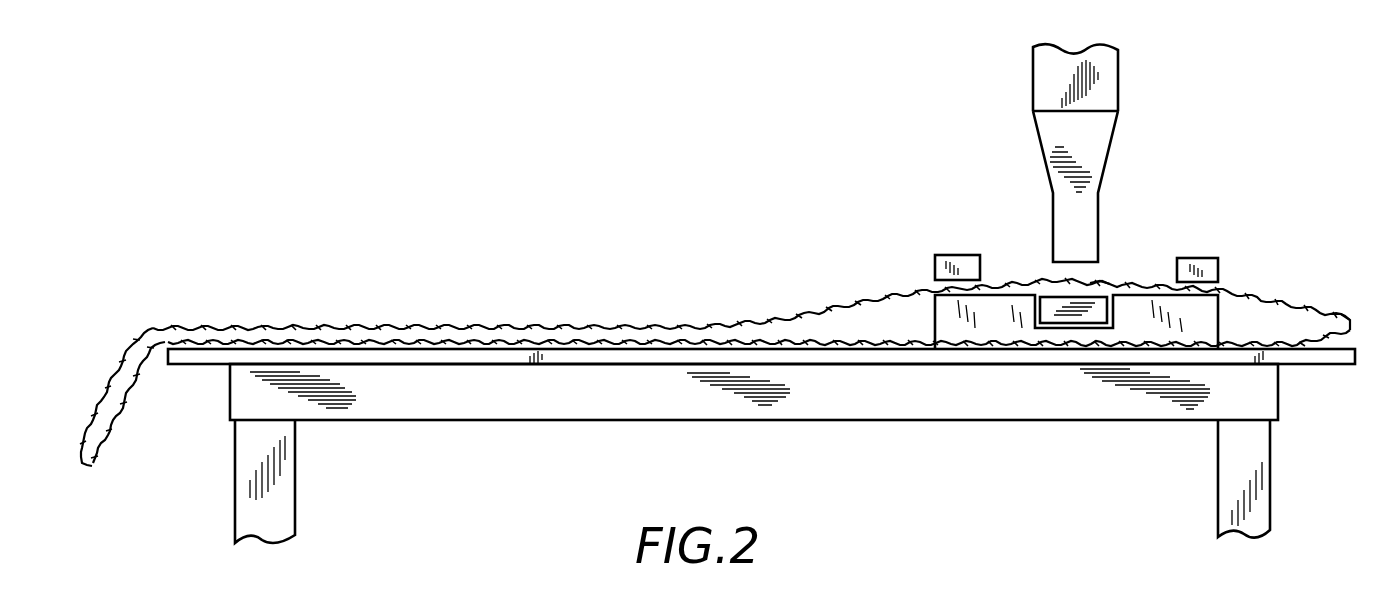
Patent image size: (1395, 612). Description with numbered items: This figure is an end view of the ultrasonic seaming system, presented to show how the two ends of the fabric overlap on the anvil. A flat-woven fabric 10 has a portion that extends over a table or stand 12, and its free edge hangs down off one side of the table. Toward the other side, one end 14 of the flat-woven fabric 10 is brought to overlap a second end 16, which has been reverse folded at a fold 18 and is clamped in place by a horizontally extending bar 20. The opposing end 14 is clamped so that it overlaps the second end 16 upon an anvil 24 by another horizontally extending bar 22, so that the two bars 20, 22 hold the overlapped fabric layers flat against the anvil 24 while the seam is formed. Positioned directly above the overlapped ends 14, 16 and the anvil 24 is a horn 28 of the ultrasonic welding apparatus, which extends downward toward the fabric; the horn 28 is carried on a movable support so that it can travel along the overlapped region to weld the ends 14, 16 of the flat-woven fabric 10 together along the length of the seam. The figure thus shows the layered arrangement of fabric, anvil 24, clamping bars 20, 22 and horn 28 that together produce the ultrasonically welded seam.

The flat-woven fabric 10 is at (193, 323).
The table or stand 12 is at (627, 402).
The end 14 is at (1049, 275).
The second end 16 is at (1103, 272).
The reverse fold 18 is at (1347, 315).
The horizontally extending bar 20 is at (1207, 265).
The horizontally extending bar 22 is at (945, 257).
The anvil 24 is at (1075, 313).
The horn 28 is at (1078, 162).